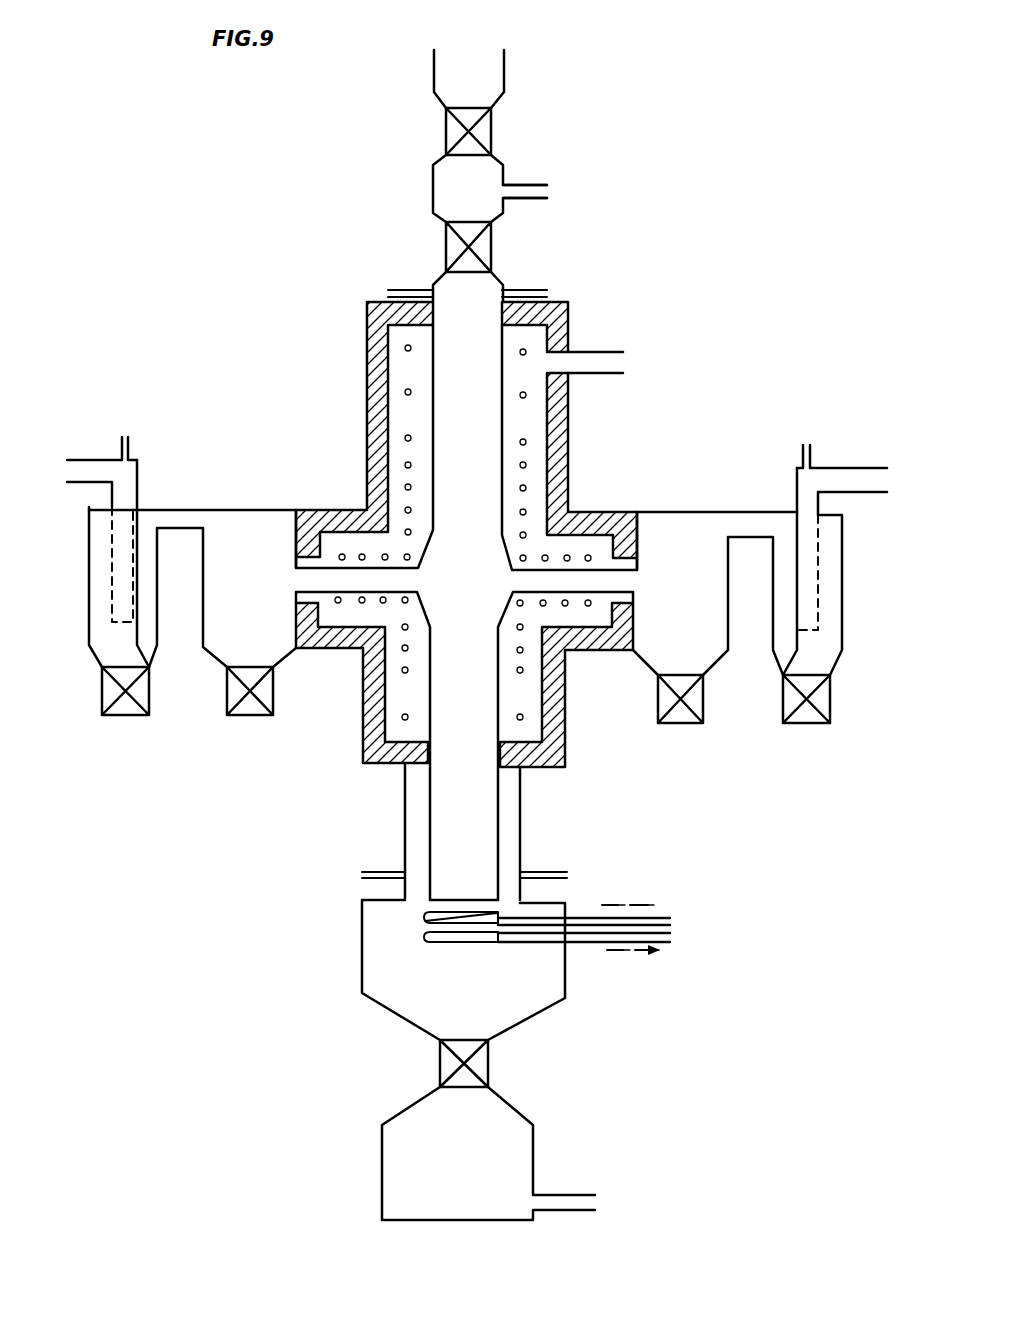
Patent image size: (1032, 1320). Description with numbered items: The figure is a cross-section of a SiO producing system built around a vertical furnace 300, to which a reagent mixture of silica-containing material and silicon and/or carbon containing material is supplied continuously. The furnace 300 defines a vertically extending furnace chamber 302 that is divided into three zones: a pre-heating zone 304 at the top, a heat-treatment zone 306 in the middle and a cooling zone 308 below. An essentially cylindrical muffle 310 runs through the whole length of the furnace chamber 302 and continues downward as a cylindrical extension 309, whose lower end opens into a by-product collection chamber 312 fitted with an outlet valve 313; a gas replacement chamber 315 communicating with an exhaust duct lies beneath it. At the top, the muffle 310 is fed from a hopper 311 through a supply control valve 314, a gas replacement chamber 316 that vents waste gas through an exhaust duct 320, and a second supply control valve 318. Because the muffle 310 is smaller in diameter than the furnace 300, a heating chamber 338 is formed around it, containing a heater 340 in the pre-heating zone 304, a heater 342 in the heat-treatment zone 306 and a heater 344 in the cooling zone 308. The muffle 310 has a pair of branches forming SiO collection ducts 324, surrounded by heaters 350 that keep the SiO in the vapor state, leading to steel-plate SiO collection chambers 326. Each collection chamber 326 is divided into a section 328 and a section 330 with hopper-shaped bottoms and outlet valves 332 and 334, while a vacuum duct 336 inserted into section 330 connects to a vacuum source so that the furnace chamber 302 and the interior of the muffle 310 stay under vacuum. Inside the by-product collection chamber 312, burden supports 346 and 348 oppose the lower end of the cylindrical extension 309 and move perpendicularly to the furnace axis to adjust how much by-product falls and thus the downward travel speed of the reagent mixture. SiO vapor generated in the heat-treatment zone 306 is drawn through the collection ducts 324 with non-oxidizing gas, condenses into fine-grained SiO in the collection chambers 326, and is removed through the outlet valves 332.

The vertical furnace 300 is at (478, 442).
The furnace chamber 302 is at (546, 427).
The pre-heating zone 304 is at (364, 379).
The heat-treatment zone 306 is at (400, 548).
The cooling zone 308 is at (410, 720).
The cylindrical extension 309 is at (482, 836).
The muffle 310 is at (500, 683).
The hopper 311 is at (490, 78).
The by-product collection chamber 312 is at (520, 1003).
The outlet valve 313 is at (487, 1062).
The supply control valve 314 is at (487, 128).
The gas replacement chamber 315 is at (407, 1162).
The gas replacement chamber 316 is at (470, 176).
The supply control valve 318 is at (487, 254).
The exhaust duct 320 is at (535, 199).
The SiO collection ducts 324 is at (330, 578).
The SiO collection chambers 326 is at (200, 660).
The section 328 is at (237, 545).
The section 330 is at (148, 638).
The outlet valve 332 is at (258, 715).
The outlet valve 334 is at (125, 715).
The vacuum duct 336 is at (100, 470).
The heating chamber 338 is at (398, 690).
The heater 340 is at (523, 395).
The heater 342 is at (405, 463).
The heater 344 is at (524, 717).
The burden support 346 is at (425, 920).
The burden support 348 is at (425, 940).
The heaters 350 is at (588, 603).